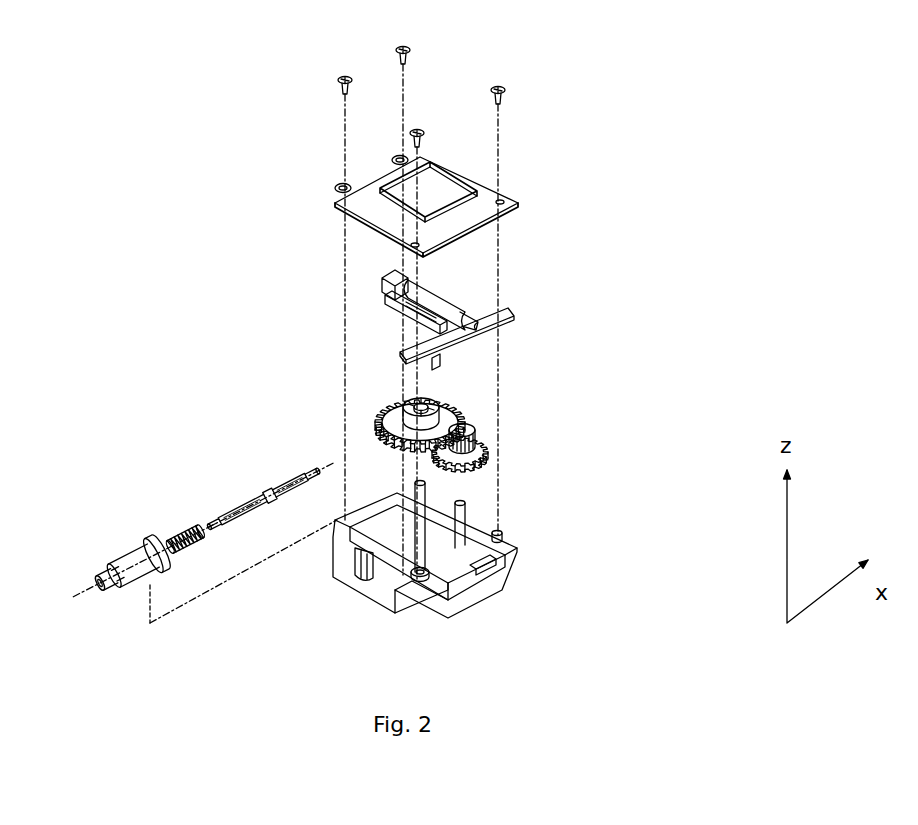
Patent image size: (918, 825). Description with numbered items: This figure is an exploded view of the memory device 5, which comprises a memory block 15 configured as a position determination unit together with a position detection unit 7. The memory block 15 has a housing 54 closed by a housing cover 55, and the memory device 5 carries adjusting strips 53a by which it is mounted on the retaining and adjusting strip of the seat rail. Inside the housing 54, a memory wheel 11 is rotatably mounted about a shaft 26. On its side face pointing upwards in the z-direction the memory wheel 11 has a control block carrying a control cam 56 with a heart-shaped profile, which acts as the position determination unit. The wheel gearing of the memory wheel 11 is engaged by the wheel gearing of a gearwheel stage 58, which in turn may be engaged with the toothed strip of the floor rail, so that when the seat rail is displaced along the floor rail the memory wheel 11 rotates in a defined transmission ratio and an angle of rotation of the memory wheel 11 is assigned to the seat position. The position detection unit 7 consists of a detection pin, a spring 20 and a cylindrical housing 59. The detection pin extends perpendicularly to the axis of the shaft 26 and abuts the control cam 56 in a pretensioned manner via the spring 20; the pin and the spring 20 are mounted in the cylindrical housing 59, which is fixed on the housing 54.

The housing cover 55 is at (483, 187).
The adjusting strips 53a is at (390, 293).
The memory device 5 is at (570, 312).
The position detection unit 7 is at (132, 348).
The control cam 56 is at (443, 398).
The memory wheel 11 is at (383, 408).
The gearwheel stage 58 is at (490, 453).
The memory block 15 is at (583, 510).
The spring 20 is at (170, 503).
The cylindrical housing 59 is at (111, 519).
The housing 54 is at (383, 597).
The shaft 26 is at (423, 502).